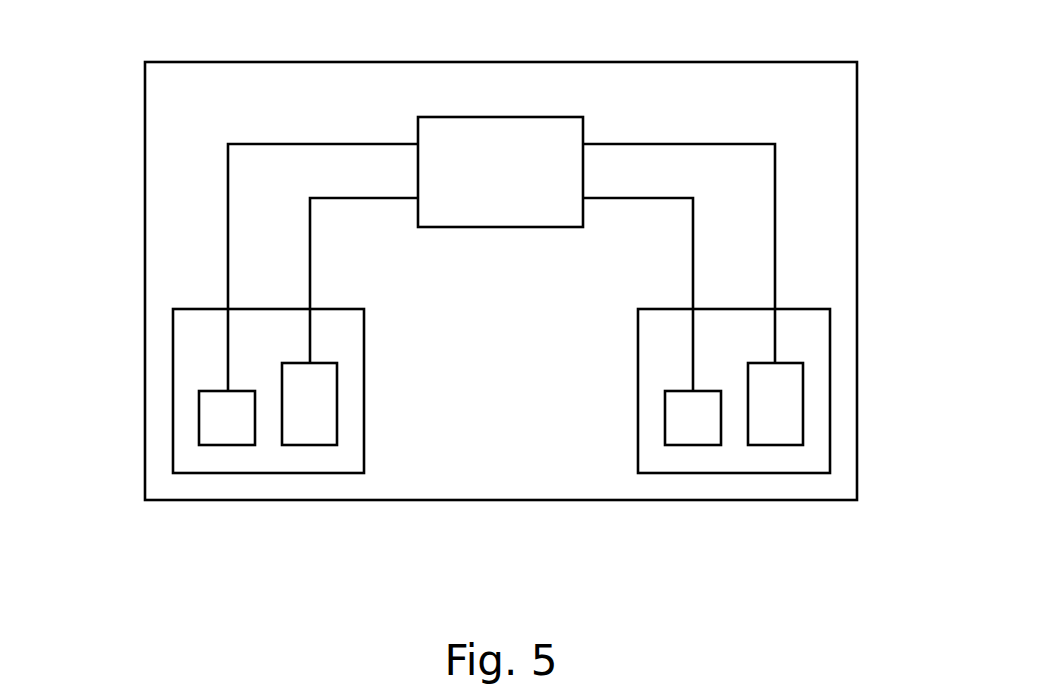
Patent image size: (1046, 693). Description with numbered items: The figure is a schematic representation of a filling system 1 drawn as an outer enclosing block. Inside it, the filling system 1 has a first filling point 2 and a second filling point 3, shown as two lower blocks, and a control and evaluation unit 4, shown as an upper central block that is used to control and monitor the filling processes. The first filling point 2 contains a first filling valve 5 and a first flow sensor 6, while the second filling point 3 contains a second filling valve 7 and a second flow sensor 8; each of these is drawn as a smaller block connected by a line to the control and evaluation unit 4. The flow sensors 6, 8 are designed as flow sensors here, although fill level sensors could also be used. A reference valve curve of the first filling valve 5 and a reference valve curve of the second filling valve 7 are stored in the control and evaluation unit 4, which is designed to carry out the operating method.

The filling system 1 is at (857, 100).
The first filling point 2 is at (173, 367).
The second filling point 3 is at (830, 354).
The control and evaluation unit 4 is at (550, 117).
The first filling valve 5 is at (228, 445).
The first flow sensor 6 is at (308, 445).
The second filling valve 7 is at (692, 445).
The second flow sensor 8 is at (775, 445).